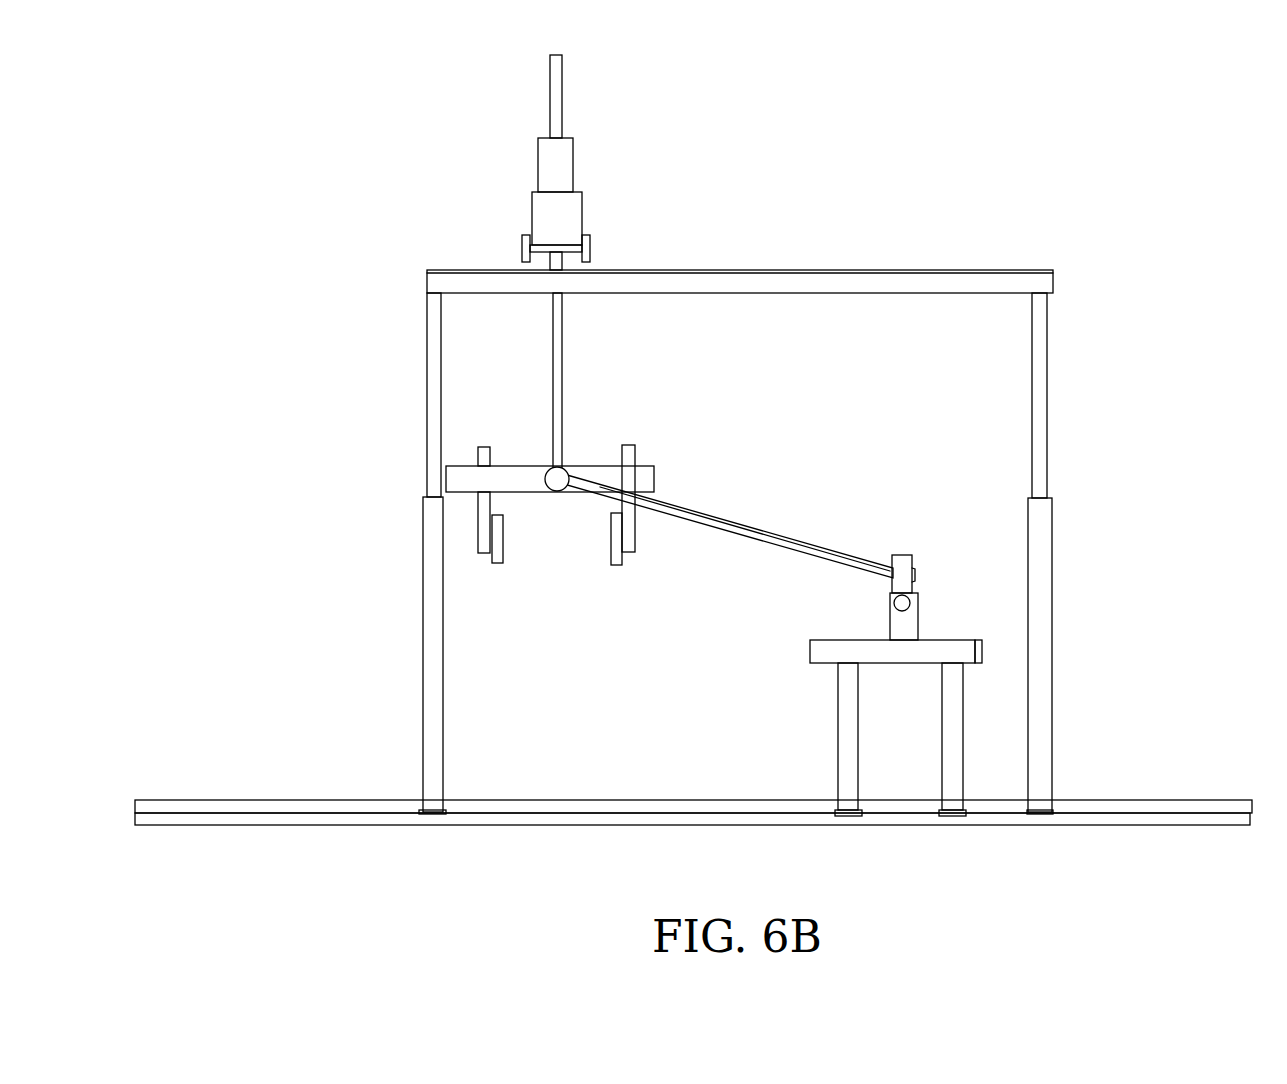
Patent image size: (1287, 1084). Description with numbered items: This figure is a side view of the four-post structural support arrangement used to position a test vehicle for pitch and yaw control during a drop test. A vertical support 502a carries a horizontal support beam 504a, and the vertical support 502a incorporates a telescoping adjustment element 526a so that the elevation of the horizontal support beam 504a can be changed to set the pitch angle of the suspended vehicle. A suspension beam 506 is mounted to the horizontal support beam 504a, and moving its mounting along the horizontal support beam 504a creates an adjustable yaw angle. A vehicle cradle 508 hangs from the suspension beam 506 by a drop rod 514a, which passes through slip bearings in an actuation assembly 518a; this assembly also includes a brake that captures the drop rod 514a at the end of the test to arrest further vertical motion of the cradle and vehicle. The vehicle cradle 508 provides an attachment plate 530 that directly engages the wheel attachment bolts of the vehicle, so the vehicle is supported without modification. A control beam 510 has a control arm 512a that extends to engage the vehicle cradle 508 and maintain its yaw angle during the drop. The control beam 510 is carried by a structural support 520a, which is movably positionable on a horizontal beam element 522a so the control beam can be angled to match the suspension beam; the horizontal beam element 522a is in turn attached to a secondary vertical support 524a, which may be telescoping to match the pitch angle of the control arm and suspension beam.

The vertical support 502a is at (425, 507).
The horizontal support beam 504a is at (950, 280).
The suspension beam 506 is at (593, 242).
The vehicle cradle 508 is at (537, 477).
The control beam 510 is at (903, 570).
The control arm 512a is at (705, 515).
The drop rod 514a is at (555, 403).
The actuation assembly 518a is at (557, 182).
The structural support 520a is at (1040, 460).
The horizontal beam element 522a is at (903, 613).
The secondary vertical support 524a is at (823, 652).
The telescoping adjustment element 526a is at (427, 373).
The attachment plate 530 is at (611, 544).